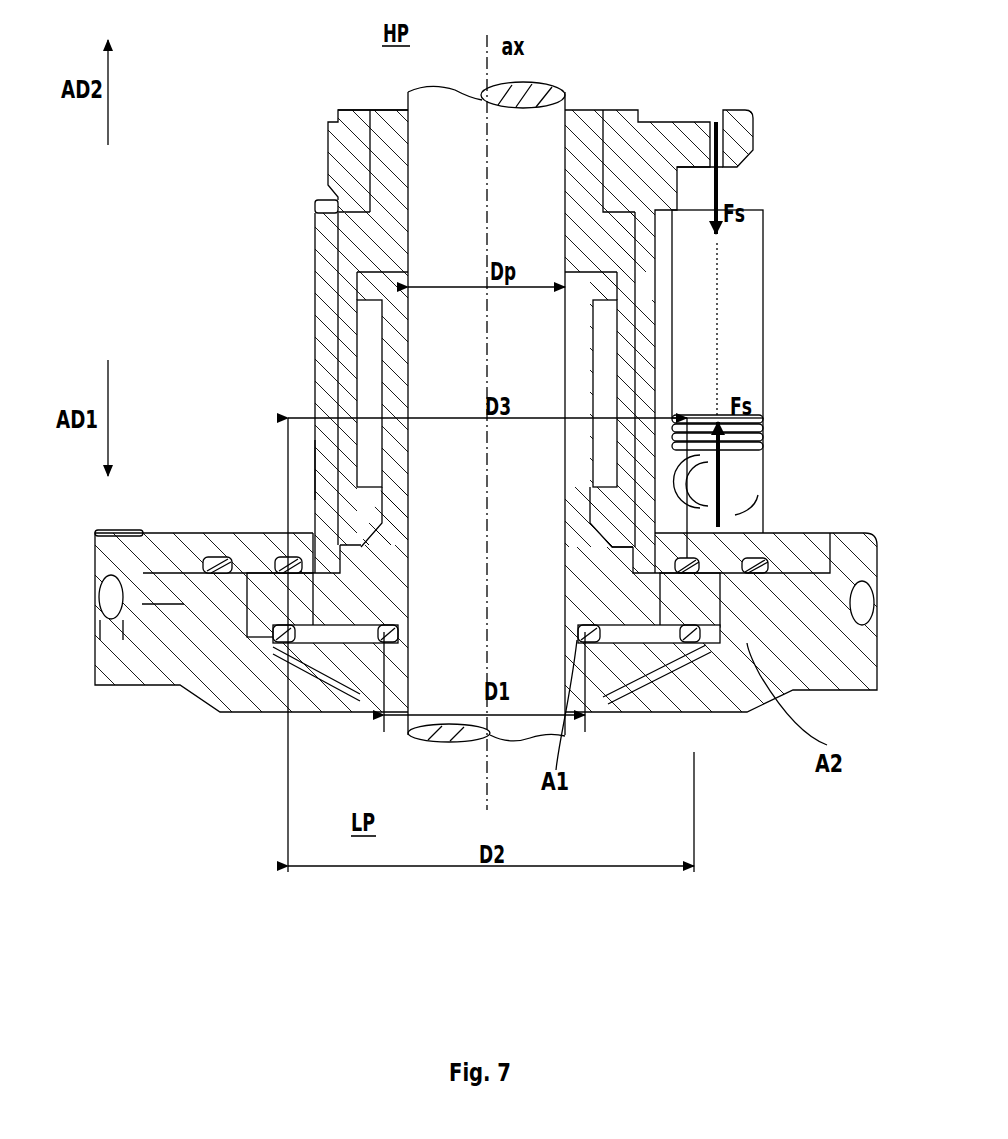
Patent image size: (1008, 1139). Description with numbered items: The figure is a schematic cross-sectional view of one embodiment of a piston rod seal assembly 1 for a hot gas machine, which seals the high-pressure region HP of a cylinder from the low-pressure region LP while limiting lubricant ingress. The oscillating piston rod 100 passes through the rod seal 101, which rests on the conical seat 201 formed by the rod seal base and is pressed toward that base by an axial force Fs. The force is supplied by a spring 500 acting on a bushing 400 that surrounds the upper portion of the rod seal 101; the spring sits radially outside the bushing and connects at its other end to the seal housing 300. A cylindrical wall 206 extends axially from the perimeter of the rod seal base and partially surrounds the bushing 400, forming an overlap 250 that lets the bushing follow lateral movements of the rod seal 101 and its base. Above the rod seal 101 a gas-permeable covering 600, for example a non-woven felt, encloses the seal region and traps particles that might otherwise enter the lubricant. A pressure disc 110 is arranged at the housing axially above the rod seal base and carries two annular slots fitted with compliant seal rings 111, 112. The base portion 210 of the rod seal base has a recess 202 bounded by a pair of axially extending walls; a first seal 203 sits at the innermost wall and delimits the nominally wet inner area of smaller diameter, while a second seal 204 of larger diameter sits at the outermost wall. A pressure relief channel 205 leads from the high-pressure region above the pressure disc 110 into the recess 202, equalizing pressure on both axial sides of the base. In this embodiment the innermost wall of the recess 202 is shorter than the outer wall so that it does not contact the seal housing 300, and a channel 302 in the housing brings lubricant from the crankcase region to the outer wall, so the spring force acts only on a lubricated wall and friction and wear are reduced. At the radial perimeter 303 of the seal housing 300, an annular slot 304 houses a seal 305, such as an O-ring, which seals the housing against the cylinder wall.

The piston rod seal assembly 1 is at (348, 88).
The piston rod 100 is at (543, 98).
The rod seal 101 is at (388, 458).
The pressure disc 110 is at (810, 550).
The compliant seal ring 111 is at (690, 558).
The compliant seal ring 112 is at (755, 560).
The conical seat 201 is at (585, 573).
The recess 202 is at (629, 634).
The first seal 203 is at (387, 636).
The second seal 204 is at (706, 642).
The pressure relief channel 205 is at (642, 601).
The cylindrical wall 206 is at (320, 312).
The base portion 210 is at (258, 607).
The overlap 250 is at (318, 473).
The seal housing 300 is at (251, 622).
The channel 302 is at (316, 668).
The radial perimeter 303 is at (95, 553).
The annular slot 304 is at (112, 627).
The seal 305 is at (108, 596).
The bushing 400 is at (342, 251).
The spring 500 is at (718, 308).
The covering 600 is at (585, 283).